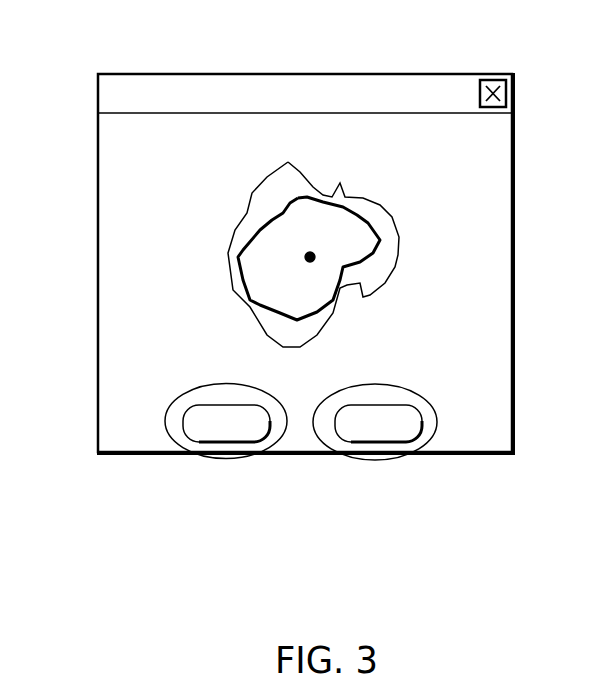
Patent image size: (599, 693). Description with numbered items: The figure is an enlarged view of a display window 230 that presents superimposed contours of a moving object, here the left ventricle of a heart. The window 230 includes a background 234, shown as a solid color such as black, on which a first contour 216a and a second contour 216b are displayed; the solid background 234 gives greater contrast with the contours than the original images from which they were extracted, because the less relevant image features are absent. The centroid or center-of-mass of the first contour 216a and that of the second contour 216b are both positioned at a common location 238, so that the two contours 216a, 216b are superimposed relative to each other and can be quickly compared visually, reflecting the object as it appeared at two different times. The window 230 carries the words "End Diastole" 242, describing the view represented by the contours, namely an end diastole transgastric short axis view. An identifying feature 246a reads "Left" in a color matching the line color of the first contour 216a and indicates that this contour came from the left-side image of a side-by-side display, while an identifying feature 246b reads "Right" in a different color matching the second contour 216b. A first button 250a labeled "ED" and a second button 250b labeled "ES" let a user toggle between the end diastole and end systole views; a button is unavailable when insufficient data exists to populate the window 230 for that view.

The display window 230 is at (452, 62).
The background 234 is at (488, 156).
The words "End Diastole" 242 is at (99, 138).
The identifying feature 246a is at (99, 166).
The identifying feature 246b is at (154, 182).
The first contour 216a is at (247, 218).
The second contour 216b is at (413, 232).
The common location 238 is at (320, 238).
The first button 250a is at (160, 448).
The second button 250b is at (443, 439).